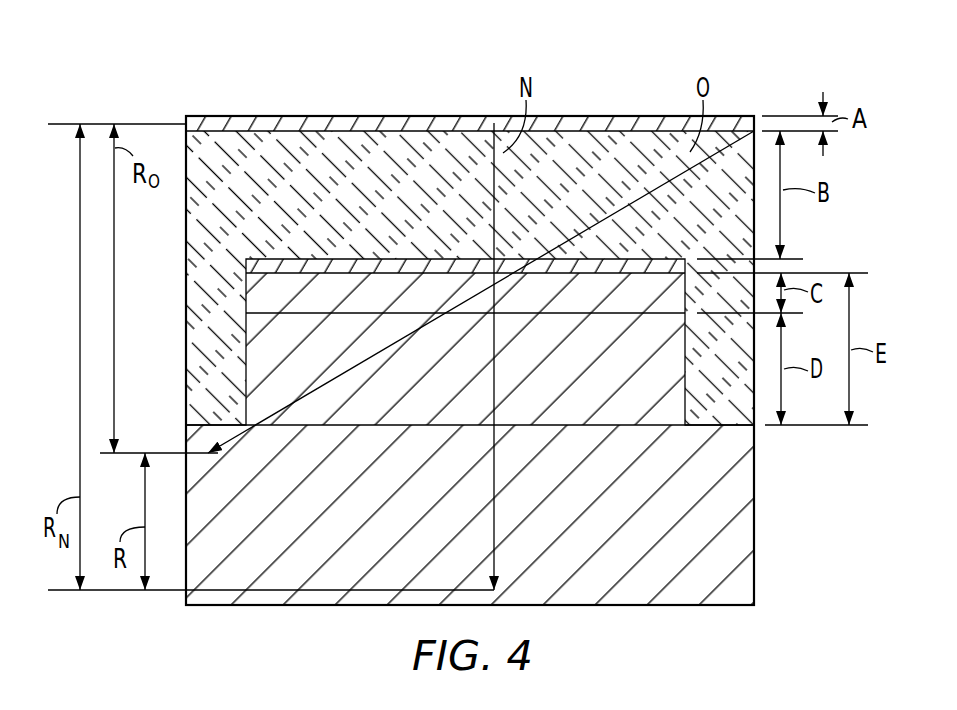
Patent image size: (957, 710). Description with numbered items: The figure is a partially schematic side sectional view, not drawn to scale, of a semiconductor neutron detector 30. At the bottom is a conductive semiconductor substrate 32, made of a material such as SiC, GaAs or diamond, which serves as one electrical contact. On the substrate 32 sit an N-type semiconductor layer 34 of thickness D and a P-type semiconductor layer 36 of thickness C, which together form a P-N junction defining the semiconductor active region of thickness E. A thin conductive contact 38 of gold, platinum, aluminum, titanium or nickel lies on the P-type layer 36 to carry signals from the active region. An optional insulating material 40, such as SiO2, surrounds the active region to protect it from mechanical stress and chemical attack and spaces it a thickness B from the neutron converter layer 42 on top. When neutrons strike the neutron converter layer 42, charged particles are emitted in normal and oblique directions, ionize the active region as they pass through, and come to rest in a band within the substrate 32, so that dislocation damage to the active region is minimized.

The neutron detector 30 is at (130, 90).
The substrate 32 is at (187, 537).
The N-type semiconductor layer 34 is at (246, 367).
The P-type semiconductor layer 36 is at (252, 292).
The conductive contact 38 is at (246, 262).
The insulating material 40 is at (187, 243).
The neutron converter layer 42 is at (212, 117).